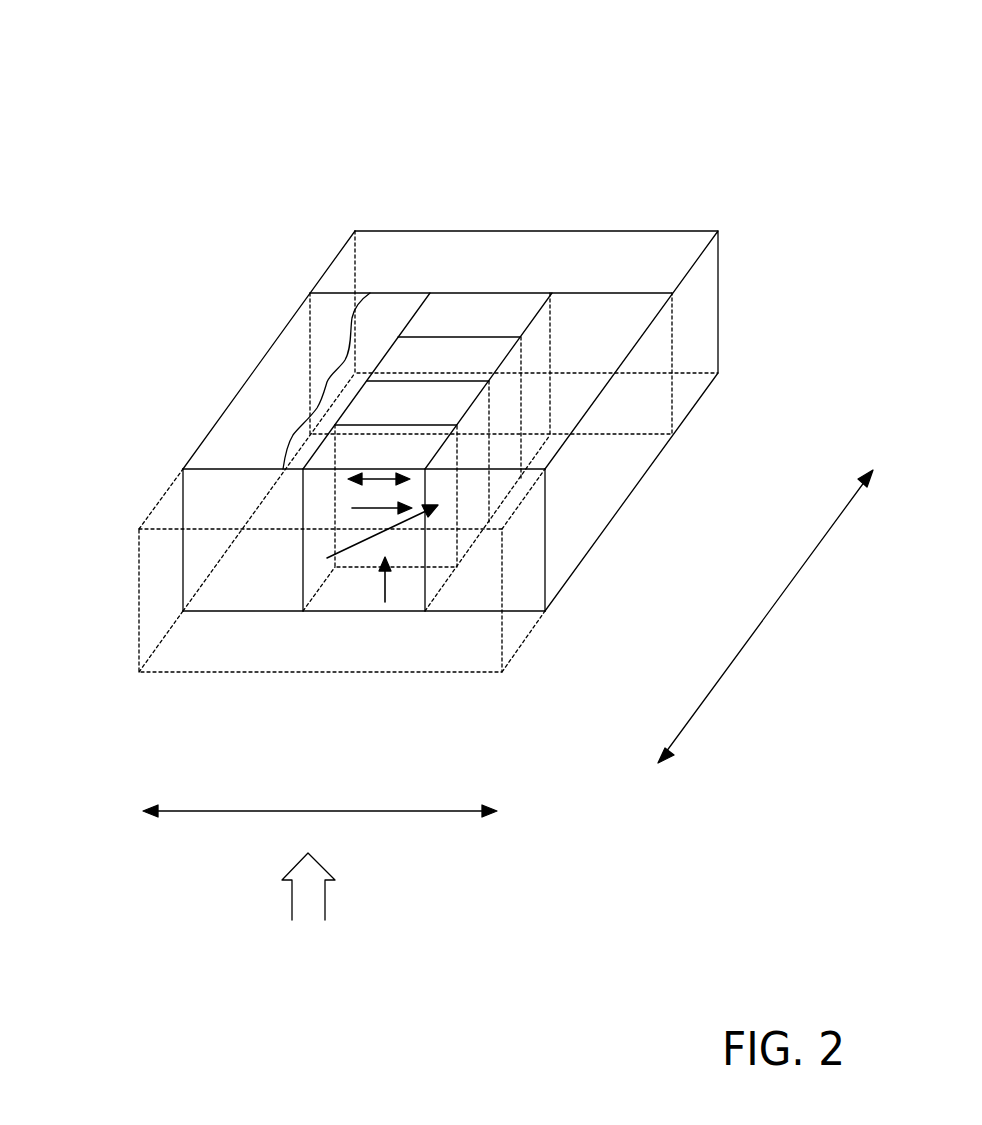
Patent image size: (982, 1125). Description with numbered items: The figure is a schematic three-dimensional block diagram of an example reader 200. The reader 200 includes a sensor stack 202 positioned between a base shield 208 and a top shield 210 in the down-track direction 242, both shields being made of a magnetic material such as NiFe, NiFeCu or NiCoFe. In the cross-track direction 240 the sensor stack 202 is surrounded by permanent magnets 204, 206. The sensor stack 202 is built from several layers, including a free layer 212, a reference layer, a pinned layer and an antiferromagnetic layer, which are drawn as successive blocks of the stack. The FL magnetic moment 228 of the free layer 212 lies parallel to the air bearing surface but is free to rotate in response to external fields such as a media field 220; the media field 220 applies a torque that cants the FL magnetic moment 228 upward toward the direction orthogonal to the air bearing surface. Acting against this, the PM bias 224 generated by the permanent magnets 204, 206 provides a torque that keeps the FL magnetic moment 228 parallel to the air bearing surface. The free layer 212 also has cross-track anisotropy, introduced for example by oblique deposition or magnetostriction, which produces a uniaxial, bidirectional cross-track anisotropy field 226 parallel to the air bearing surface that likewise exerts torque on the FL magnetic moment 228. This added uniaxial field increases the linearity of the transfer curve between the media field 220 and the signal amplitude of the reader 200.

The reader 200 is at (127, 75).
The sensor stack 202 is at (328, 377).
The permanent magnet 204 is at (230, 400).
The permanent magnet 206 is at (648, 468).
The base shield 208 is at (337, 253).
The top shield 210 is at (157, 502).
The free layer 212 is at (413, 612).
The media field 220 is at (380, 585).
The PM bias 224 is at (363, 510).
The cross-track anisotropy field 226 is at (395, 482).
The FL magnetic moment 228 is at (395, 531).
The cross-track direction 240 is at (460, 811).
The down-track direction 242 is at (752, 640).